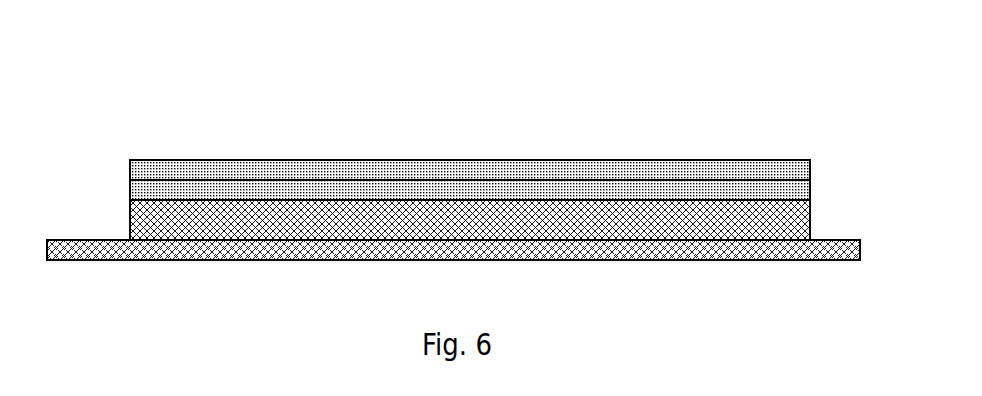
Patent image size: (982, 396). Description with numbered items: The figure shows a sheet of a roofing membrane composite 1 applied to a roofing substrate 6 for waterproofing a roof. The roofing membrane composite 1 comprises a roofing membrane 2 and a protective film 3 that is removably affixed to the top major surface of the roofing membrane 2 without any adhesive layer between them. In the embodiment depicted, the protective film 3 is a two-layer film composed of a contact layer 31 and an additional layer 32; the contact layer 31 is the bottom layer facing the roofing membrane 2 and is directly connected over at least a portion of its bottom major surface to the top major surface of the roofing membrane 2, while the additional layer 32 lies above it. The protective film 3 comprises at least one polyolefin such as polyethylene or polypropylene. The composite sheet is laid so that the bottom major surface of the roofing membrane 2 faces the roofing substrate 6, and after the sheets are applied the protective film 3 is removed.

The roofing membrane composite 1 is at (468, 138).
The roofing membrane 2 is at (810, 228).
The protective film 3 is at (468, 160).
The contact layer 31 is at (810, 190).
The additional layer 32 is at (810, 166).
The roofing substrate 6 is at (800, 260).